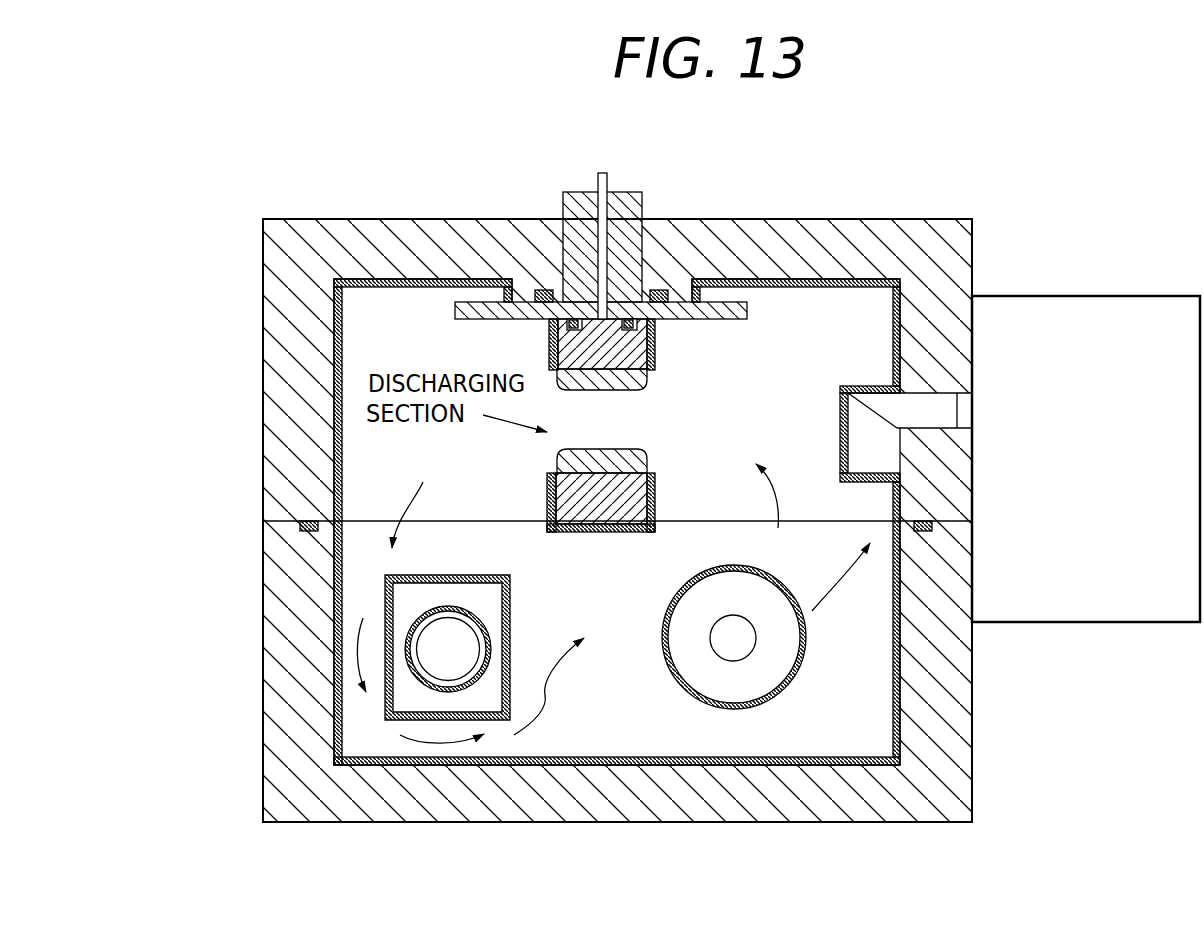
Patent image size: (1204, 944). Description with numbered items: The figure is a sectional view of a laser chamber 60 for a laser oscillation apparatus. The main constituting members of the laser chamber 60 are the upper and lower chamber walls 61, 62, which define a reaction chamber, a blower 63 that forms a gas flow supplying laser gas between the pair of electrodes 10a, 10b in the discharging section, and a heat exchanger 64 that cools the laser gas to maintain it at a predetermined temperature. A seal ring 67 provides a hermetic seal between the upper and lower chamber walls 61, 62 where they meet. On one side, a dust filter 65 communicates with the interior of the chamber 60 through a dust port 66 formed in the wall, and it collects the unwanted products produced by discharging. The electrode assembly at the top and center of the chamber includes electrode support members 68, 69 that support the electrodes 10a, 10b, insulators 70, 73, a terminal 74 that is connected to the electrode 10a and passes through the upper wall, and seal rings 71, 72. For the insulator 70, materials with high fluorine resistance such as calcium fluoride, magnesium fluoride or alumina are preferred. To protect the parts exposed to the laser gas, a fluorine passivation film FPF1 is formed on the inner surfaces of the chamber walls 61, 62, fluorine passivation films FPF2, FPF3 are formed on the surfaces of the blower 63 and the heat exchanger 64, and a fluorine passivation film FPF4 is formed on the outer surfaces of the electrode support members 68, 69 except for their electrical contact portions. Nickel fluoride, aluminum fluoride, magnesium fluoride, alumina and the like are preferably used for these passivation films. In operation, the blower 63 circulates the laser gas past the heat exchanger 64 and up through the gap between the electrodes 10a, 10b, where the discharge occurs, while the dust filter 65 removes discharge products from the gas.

The laser chamber 60 is at (947, 191).
The upper chamber wall 61 is at (386, 219).
The lower chamber wall 62 is at (390, 822).
The blower 63 is at (786, 647).
The heat exchanger 64 is at (485, 698).
The dust filter 65 is at (1134, 296).
The dust port 66 is at (860, 488).
The seal ring 67 is at (300, 530).
The electrode support member 68 is at (656, 355).
The electrode support member 69 is at (636, 497).
The insulator 70 is at (748, 312).
The seal ring 71 is at (655, 329).
The seal ring 72 is at (661, 289).
The insulator 73 is at (633, 192).
The terminal 74 is at (602, 172).
The electrode 10a is at (634, 385).
The electrode 10b is at (634, 458).
The fluorine passivation film FPF1 is at (628, 725).
The fluorine passivation film FPF2 is at (792, 687).
The fluorine passivation film FPF3 is at (513, 622).
The fluorine passivation film FPF4 is at (549, 344).